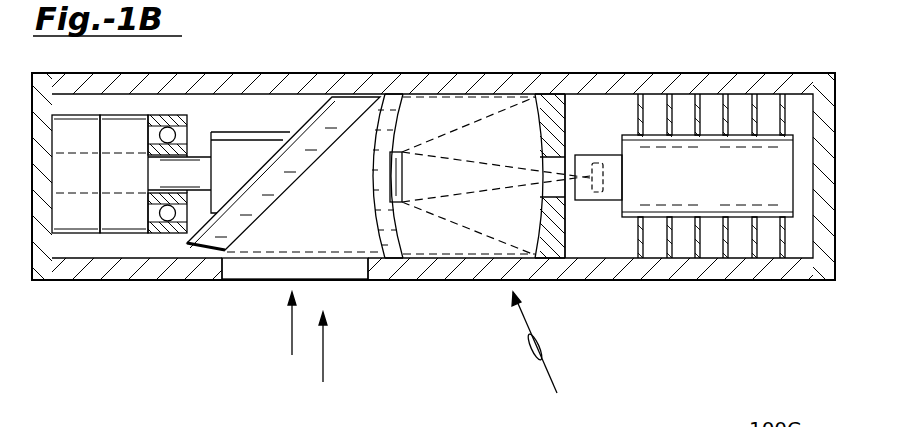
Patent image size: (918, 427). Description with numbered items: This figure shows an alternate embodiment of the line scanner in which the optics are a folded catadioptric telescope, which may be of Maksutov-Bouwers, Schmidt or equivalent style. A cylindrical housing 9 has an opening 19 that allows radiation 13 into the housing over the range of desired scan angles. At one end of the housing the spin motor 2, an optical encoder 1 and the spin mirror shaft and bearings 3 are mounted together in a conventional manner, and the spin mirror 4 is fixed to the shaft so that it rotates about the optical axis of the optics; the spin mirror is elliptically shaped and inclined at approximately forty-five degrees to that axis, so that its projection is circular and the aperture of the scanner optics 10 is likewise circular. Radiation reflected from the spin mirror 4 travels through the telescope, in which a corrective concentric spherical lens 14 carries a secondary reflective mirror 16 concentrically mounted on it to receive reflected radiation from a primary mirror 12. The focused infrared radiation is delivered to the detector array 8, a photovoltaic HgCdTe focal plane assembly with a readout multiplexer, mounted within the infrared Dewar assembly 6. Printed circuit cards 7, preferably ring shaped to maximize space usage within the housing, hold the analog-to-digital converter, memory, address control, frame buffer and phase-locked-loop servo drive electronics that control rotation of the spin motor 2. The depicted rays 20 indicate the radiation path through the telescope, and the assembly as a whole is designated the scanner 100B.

The optical encoder 1 is at (72, 237).
The spin motor 2 is at (118, 237).
The spin mirror shaft and bearings 3 is at (195, 155).
The spin mirror 4 is at (307, 100).
The infrared Dewar assembly 6 is at (620, 218).
The printed circuit cards 7 is at (692, 258).
The detector array 8 is at (594, 162).
The cylindrical housing 9 is at (523, 74).
The aperture of the scanner optics 10 is at (542, 172).
The primary mirror 12 is at (567, 230).
The radiation 13 is at (323, 368).
The corrective concentric spherical lens 14 is at (433, 99).
The secondary reflective mirror 16 is at (402, 178).
The opening 19 is at (230, 268).
The light rays 20 is at (460, 245).
The sensor head 100B is at (563, 351).